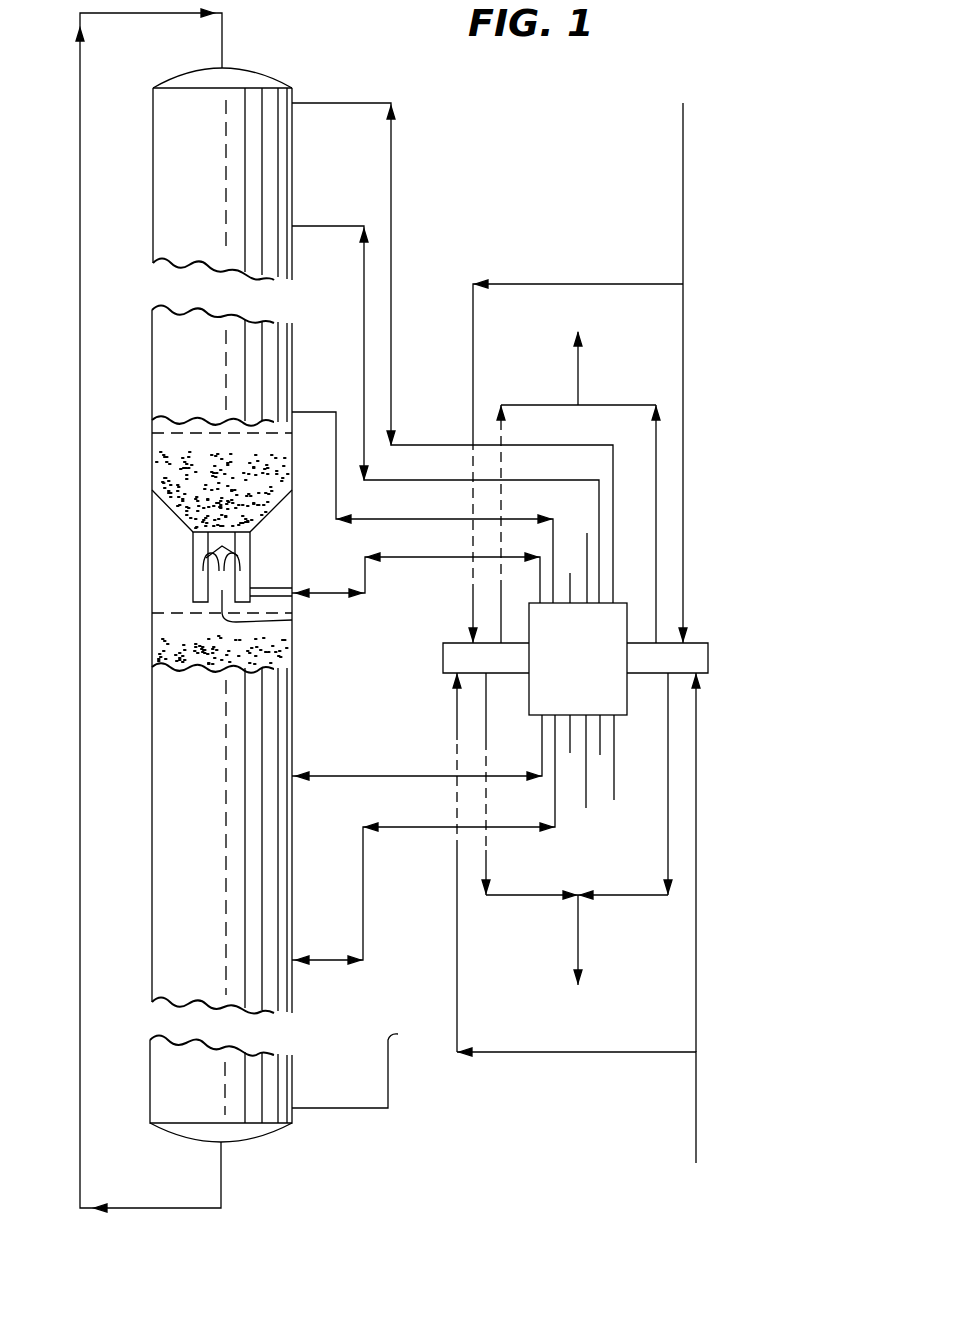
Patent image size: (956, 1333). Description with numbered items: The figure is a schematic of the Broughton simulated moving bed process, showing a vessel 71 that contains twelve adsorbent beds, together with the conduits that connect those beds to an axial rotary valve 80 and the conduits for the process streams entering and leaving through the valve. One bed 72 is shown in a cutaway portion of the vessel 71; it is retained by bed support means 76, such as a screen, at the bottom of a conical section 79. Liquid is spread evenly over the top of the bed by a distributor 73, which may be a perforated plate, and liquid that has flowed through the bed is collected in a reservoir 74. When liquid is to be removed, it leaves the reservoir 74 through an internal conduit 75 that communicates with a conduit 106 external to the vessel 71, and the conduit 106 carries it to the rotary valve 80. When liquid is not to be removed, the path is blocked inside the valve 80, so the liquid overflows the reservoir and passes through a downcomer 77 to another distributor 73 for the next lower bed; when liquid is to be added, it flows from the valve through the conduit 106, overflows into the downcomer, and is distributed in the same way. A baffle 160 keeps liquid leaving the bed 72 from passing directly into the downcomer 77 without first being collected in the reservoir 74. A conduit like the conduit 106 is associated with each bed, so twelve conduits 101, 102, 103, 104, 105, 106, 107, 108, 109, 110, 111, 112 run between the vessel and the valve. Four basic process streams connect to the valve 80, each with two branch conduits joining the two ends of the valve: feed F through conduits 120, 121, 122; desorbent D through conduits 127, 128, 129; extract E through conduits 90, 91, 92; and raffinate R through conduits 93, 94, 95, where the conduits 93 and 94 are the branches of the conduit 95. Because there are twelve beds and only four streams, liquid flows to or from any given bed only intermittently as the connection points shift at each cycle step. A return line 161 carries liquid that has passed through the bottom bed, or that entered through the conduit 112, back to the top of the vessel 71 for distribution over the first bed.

The vessel 71 is at (294, 138).
The bed 72 is at (190, 478).
The distributor 73 is at (173, 433).
The reservoir 74 is at (200, 579).
The internal conduit 75 is at (272, 588).
The bed support means 76 is at (212, 527).
The downcomer 77 is at (292, 620).
The conical section 79 is at (270, 514).
The rotary valve 80 is at (708, 655).
The extract conduit 90 is at (578, 370).
The extract conduit 91 is at (608, 411).
The extract conduit 92 is at (553, 411).
The raffinate branch conduit 93 is at (667, 852).
The raffinate branch conduit 94 is at (487, 853).
The raffinate conduit 95 is at (578, 927).
The conduit 101 is at (393, 148).
The conduit 102 is at (318, 226).
The conduit 103 is at (587, 531).
The conduit 104 is at (570, 571).
The conduit 105 is at (313, 411).
The conduit 106 is at (447, 560).
The conduit 107 is at (440, 772).
The conduit 108 is at (320, 962).
The conduit 109 is at (570, 765).
The conduit 110 is at (586, 820).
The conduit 111 is at (600, 767).
The conduit 112 is at (614, 800).
The feed conduit 120 is at (692, 187).
The feed conduit 121 is at (522, 284).
The feed conduit 122 is at (693, 414).
The desorbent conduit 127 is at (696, 1100).
The desorbent conduit 128 is at (697, 935).
The desorbent conduit 129 is at (457, 969).
The baffle 160 is at (195, 547).
The return line 161 is at (80, 768).